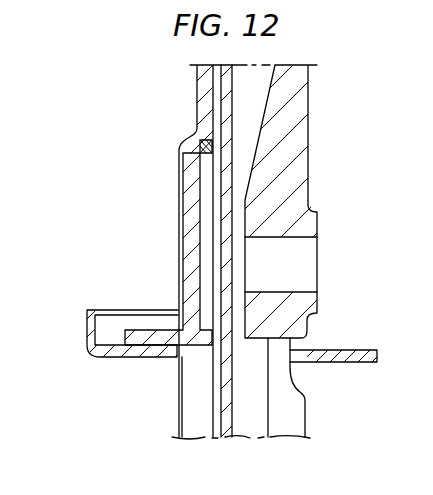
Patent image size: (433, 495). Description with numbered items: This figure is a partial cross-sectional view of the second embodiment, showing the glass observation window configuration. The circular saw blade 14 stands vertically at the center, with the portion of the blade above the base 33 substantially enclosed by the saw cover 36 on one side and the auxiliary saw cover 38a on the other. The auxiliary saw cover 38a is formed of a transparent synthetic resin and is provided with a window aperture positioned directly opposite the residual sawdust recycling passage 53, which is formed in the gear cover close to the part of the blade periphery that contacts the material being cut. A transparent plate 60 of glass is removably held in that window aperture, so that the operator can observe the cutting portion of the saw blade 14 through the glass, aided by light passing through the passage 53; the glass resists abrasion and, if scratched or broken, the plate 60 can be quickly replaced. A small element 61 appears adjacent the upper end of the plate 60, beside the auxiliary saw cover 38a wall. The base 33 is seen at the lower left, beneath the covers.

The auxiliary saw cover 38a is at (200, 91).
The seal ring 61 is at (200, 147).
The transparent plate 60 is at (190, 179).
The circular saw blade 14 is at (232, 412).
The saw cover 36 is at (298, 142).
The residual sawdust recycling passage 53 is at (300, 280).
The base 33 is at (88, 325).